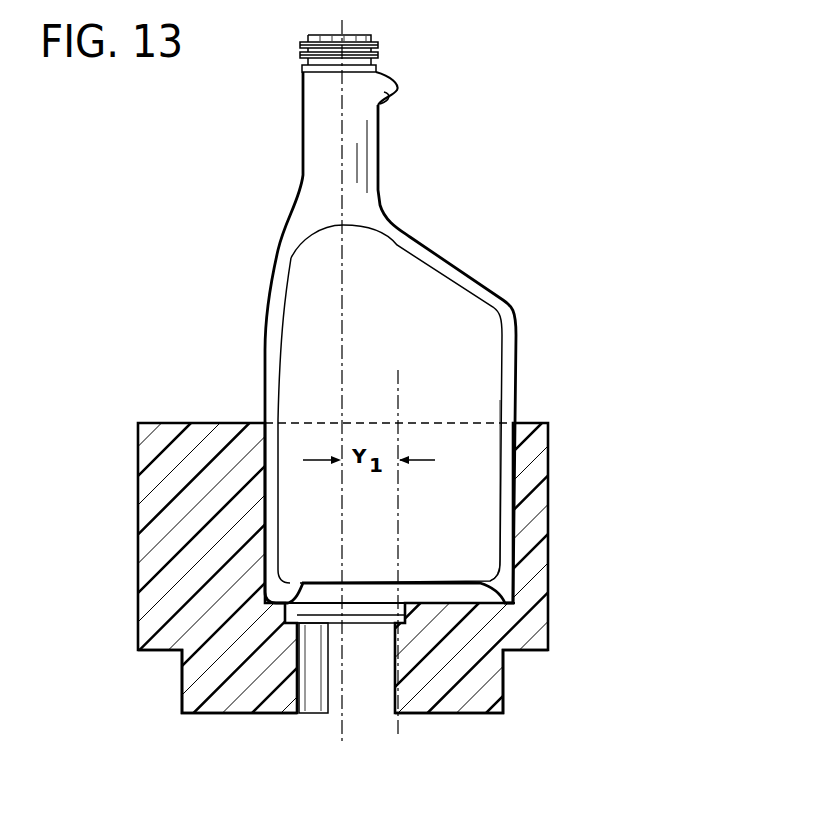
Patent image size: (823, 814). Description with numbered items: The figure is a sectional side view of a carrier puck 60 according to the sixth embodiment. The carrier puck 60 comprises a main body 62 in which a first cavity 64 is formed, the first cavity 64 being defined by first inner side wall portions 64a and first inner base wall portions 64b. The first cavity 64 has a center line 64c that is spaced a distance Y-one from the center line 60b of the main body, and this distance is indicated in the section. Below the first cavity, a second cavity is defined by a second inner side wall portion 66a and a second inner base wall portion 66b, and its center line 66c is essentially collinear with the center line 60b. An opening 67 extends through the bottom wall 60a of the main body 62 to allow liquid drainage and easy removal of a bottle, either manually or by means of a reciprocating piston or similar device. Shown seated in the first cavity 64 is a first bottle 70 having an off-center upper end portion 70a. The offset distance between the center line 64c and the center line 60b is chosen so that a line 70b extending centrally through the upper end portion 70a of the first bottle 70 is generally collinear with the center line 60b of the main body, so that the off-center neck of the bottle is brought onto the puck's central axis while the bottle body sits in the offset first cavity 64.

The carrier puck 60 is at (537, 440).
The bottom wall 60a is at (492, 680).
The center line of the main body 60b is at (342, 348).
The main body 62 is at (540, 465).
The first cavity 64 is at (528, 515).
The first inner side wall portions 64a is at (528, 547).
The first inner base wall portions 64b is at (524, 600).
The center line of the first cavity 64c is at (398, 382).
The second inner side wall portion 66a is at (275, 548).
The second inner base wall portion 66b is at (287, 625).
The center line of the second cavity 66c is at (390, 382).
The opening 67 is at (393, 670).
The first bottle 70 is at (405, 240).
The off-center upper end portion 70a is at (370, 80).
The line extending centrally through the upper end portion 70b is at (343, 135).